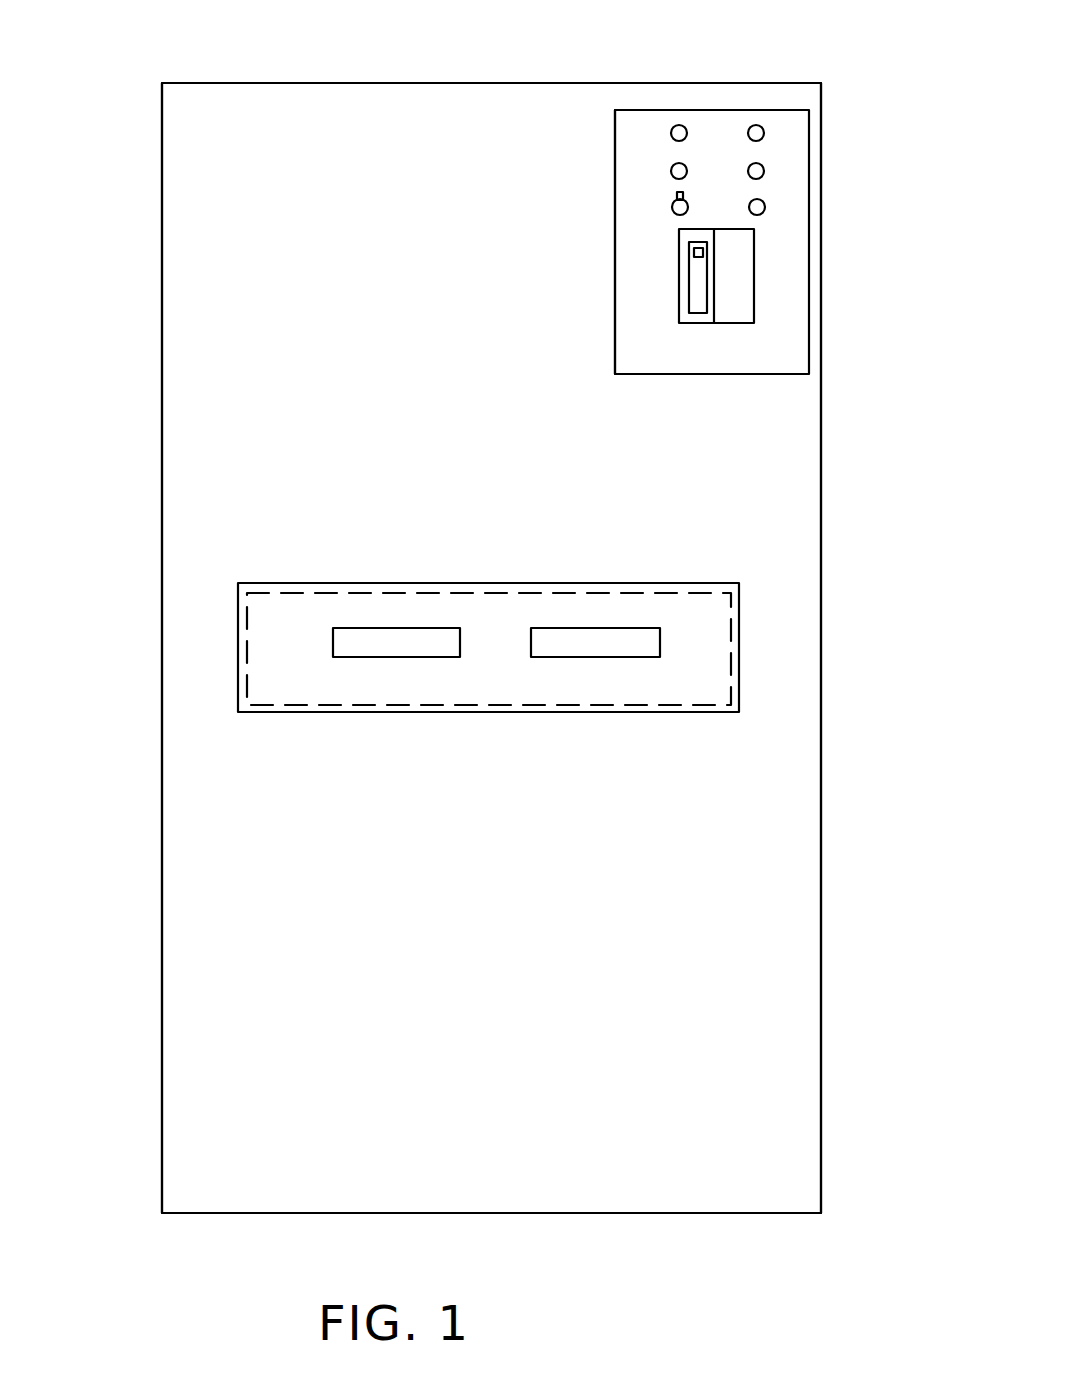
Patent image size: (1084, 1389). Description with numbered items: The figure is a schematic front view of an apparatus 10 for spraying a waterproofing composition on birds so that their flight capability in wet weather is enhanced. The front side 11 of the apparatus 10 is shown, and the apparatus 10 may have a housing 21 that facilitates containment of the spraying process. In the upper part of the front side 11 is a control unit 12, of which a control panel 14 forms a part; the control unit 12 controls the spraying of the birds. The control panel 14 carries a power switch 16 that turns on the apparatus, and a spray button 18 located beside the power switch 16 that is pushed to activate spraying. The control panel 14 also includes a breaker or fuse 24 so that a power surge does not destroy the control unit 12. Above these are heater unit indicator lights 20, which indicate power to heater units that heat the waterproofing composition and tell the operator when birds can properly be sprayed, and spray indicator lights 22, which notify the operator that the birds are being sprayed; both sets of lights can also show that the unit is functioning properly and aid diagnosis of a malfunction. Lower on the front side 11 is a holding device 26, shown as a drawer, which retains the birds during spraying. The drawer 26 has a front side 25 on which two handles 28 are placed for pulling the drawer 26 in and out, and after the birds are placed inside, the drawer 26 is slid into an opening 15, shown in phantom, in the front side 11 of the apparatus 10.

The apparatus 10 is at (826, 918).
The front side 11 is at (192, 937).
The control unit 12 is at (788, 222).
The control panel 14 is at (621, 330).
The opening 15 is at (316, 670).
The power switch 16 is at (671, 207).
The spray button 18 is at (767, 198).
The heater unit indicator lights 20 is at (750, 122).
The housing 21 is at (787, 1065).
The spray indicator lights 22 is at (748, 166).
The breaker 24 is at (755, 266).
The front side of drawer 25 is at (678, 683).
The holding device 26 is at (577, 585).
The handles 28 is at (540, 657).